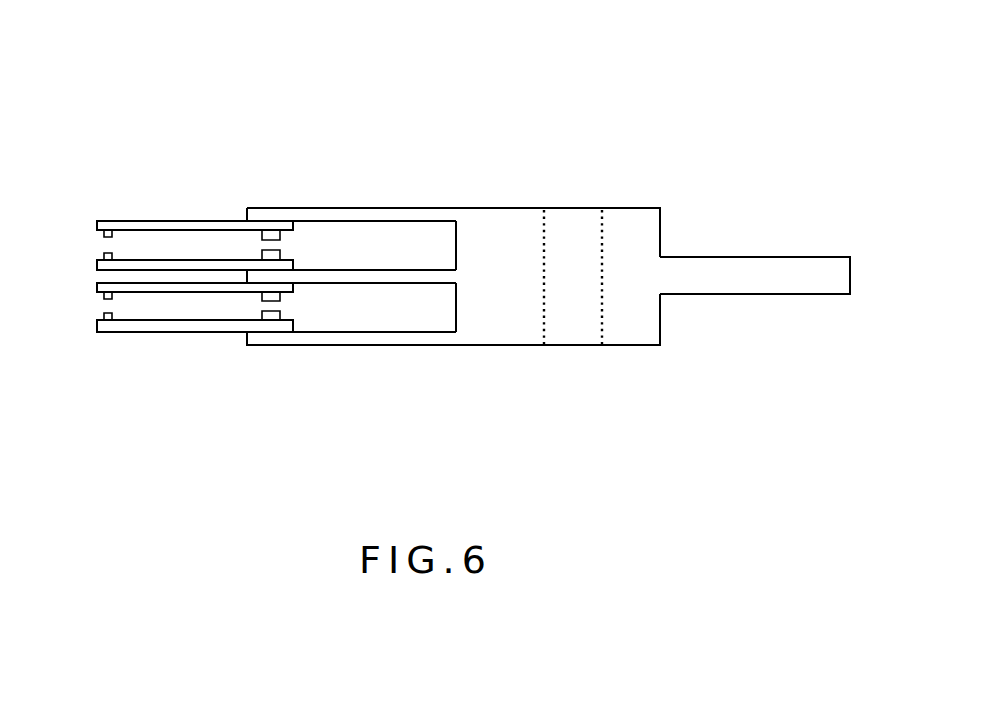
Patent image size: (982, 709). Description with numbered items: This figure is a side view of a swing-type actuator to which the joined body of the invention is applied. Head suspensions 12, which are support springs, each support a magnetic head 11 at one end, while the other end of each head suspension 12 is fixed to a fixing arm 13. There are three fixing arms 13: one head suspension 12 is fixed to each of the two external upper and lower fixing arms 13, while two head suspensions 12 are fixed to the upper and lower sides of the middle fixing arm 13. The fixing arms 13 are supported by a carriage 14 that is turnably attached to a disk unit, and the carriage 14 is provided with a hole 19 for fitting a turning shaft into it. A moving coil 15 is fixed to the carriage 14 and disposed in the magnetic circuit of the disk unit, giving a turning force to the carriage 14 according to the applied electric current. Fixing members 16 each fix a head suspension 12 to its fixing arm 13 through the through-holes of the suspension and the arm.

The magnetic head 11 is at (105, 255).
The head suspension 12 is at (173, 221).
The fixing arm 13 is at (408, 208).
The carriage 14 is at (523, 208).
The moving coil 15 is at (739, 257).
The fixing member 16 is at (284, 242).
The hole 19 is at (572, 310).